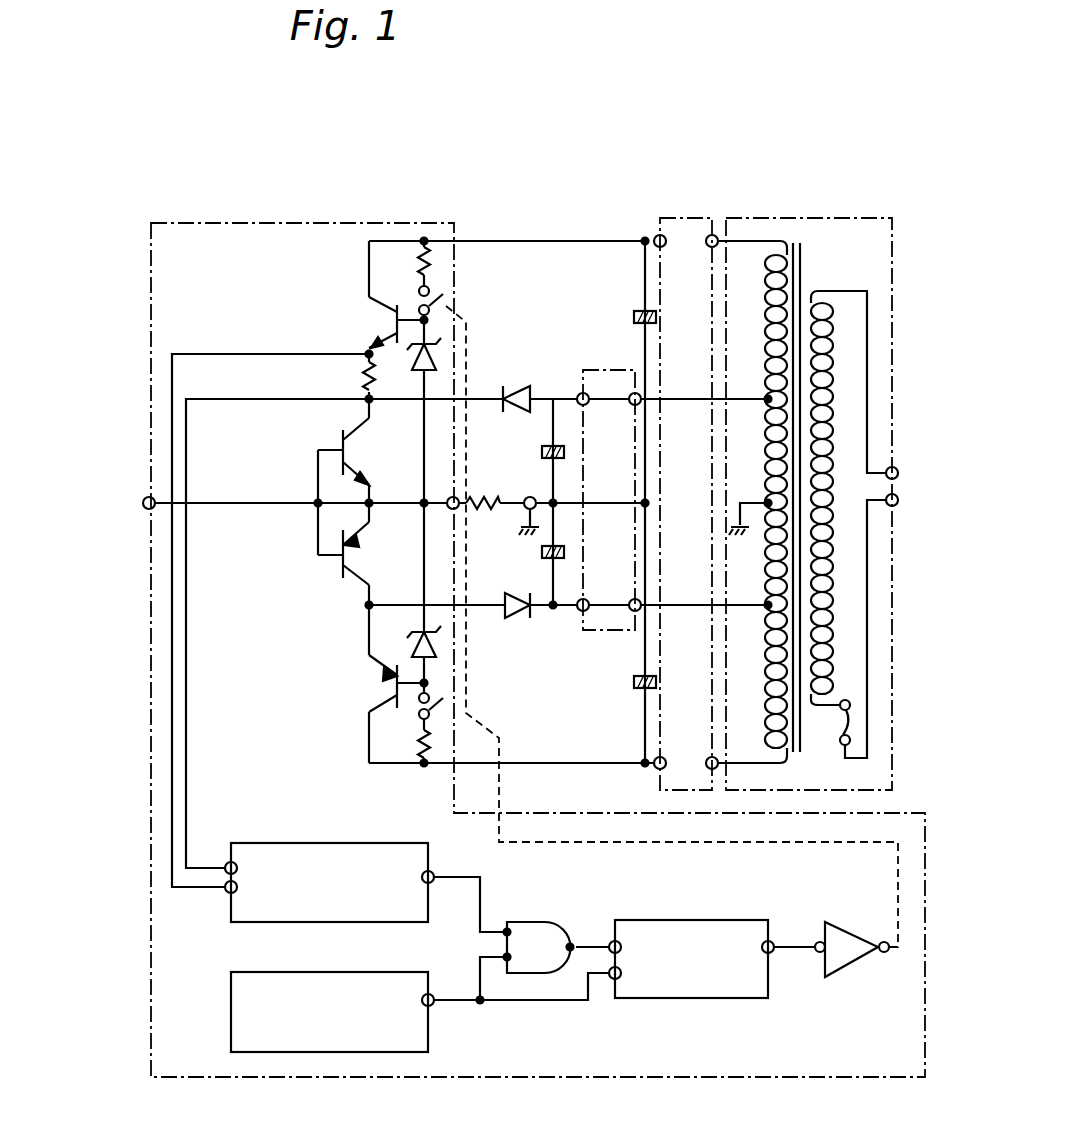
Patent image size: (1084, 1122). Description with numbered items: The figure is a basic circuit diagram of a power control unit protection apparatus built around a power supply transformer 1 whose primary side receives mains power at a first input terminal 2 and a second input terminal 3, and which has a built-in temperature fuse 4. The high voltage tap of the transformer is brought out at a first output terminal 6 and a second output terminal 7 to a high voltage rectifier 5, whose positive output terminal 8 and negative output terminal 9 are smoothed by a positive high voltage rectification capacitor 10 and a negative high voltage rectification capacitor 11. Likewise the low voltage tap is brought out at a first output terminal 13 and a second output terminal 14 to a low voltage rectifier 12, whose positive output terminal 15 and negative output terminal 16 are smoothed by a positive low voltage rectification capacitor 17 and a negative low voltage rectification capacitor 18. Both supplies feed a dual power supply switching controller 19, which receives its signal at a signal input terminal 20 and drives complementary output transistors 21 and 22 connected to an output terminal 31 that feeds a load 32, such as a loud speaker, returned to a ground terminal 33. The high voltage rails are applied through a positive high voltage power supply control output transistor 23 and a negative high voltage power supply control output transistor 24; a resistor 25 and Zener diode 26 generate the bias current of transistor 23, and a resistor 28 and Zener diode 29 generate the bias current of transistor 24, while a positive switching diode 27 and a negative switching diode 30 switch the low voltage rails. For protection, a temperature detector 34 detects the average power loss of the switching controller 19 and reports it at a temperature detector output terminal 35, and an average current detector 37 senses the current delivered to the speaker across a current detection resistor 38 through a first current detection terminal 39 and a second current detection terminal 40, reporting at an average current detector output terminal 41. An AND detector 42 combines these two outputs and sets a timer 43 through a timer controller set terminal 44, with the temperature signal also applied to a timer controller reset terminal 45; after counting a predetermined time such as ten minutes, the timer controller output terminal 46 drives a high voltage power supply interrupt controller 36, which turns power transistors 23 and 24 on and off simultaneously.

The power supply transformer 1 is at (818, 216).
The first input terminal 2 is at (897, 470).
The second input terminal 3 is at (896, 505).
The temperature fuse 4 is at (840, 722).
The high voltage rectifier 5 is at (688, 216).
The first output terminal 6 is at (708, 248).
The second output terminal 7 is at (710, 757).
The positive output terminal 8 is at (656, 236).
The negative output terminal 9 is at (656, 768).
The positive high voltage rectification capacitor 10 is at (640, 312).
The negative high voltage rectification capacitor 11 is at (640, 685).
The low voltage rectifier 12 is at (612, 370).
The first output terminal 13 is at (632, 404).
The second output terminal 14 is at (632, 602).
The positive output terminal 15 is at (579, 393).
The negative output terminal 16 is at (582, 612).
The positive low voltage rectification capacitor 17 is at (550, 445).
The negative low voltage rectification capacitor 18 is at (562, 552).
The dual power supply switching controller 19 is at (357, 222).
The dual power supply switching controller signal input terminal 20 is at (145, 505).
The complementary output transistor 21 is at (357, 445).
The complementary output transistor 22 is at (345, 562).
The positive high voltage power supply control output transistor 23 is at (380, 324).
The negative high voltage power supply control output transistor 24 is at (393, 683).
The resistor 25 is at (434, 262).
The Zener diode 26 is at (410, 350).
The positive switching diode 27 is at (512, 386).
The resistor 28 is at (416, 748).
The Zener diode 29 is at (410, 648).
The negative switching diode 30 is at (512, 618).
The output terminal 31 is at (450, 508).
The load 32 is at (490, 510).
The ground terminal 33 is at (528, 498).
The temperature detector 34 is at (230, 1025).
The temperature detector output terminal 35 is at (435, 1003).
The high voltage power supply interrupt controller 36 is at (850, 925).
The average current detector 37 is at (355, 843).
The current detection resistor 38 is at (365, 375).
The first current detection terminal 39 is at (231, 862).
The second current detection terminal 40 is at (228, 893).
The average current detector output terminal 41 is at (434, 875).
The AND detector 42 is at (537, 921).
The timer 43 is at (683, 920).
The timer controller set terminal 44 is at (613, 941).
The timer controller reset terminal 45 is at (612, 979).
The timer controller output terminal 46 is at (772, 952).